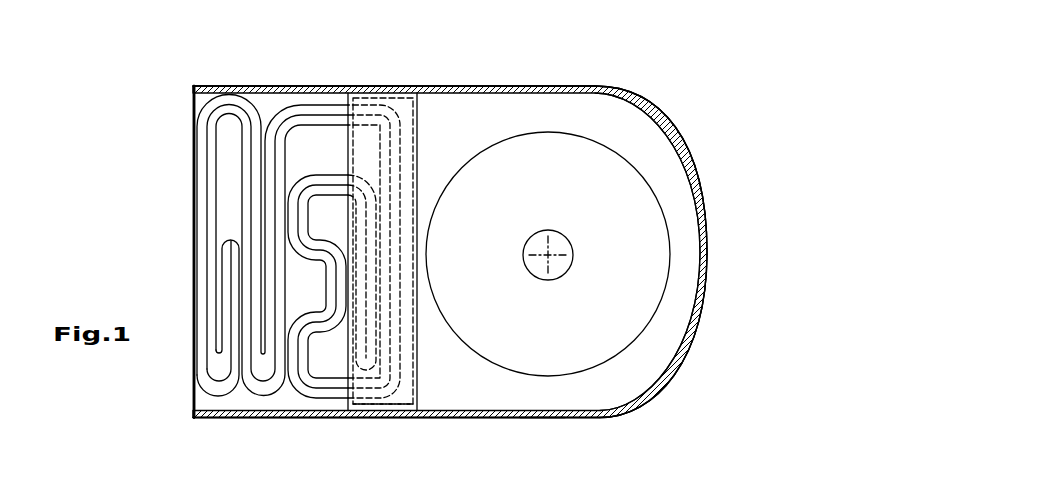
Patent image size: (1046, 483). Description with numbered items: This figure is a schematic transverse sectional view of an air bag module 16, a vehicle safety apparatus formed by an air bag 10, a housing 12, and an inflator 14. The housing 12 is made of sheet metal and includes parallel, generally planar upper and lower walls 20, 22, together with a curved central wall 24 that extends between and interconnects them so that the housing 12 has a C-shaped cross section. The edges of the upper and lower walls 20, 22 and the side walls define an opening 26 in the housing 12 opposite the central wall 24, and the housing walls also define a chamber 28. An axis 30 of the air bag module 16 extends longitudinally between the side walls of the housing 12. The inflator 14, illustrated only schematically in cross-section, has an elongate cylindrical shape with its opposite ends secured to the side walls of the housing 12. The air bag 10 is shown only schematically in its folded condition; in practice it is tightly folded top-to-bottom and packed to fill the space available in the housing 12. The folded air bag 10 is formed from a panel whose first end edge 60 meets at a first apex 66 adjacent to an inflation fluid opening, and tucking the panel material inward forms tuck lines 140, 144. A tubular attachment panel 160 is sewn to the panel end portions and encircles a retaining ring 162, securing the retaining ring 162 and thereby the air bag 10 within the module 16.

The air bag 10 is at (239, 408).
The housing 12 is at (670, 113).
The inflator 14 is at (640, 172).
The air bag module 16 is at (122, 196).
The upper wall 20 is at (313, 85).
The lower wall 22 is at (382, 421).
The curved central wall 24 is at (698, 336).
The opening 26 is at (196, 87).
The chamber 28 is at (627, 387).
The axis 30 is at (572, 262).
The first end edge 60 is at (420, 418).
The first apex 66 is at (542, 451).
The tuck line 140 is at (228, 238).
The tuck line 144 is at (357, 421).
The tubular attachment panel 160 is at (417, 136).
The retaining ring 162 is at (398, 98).